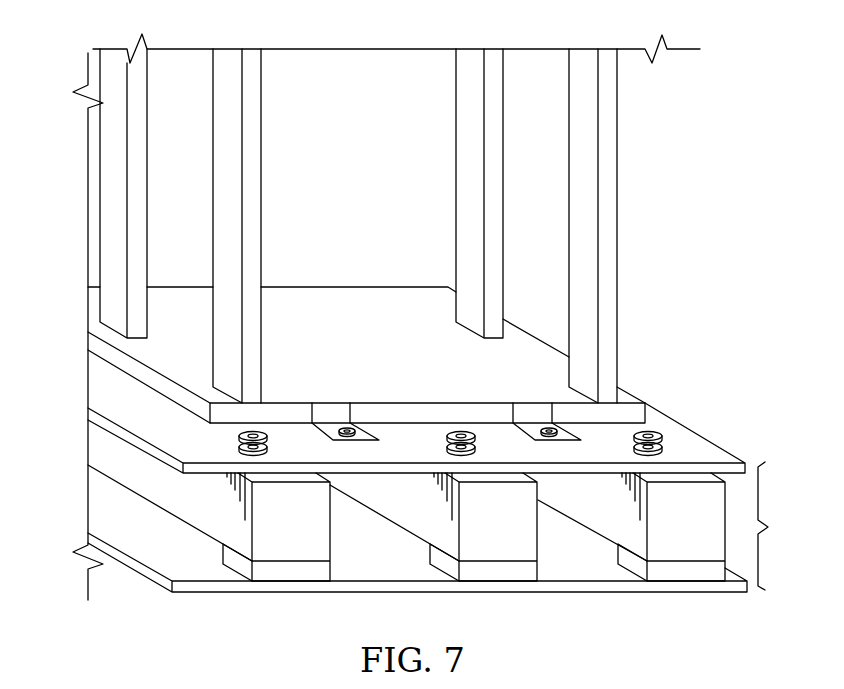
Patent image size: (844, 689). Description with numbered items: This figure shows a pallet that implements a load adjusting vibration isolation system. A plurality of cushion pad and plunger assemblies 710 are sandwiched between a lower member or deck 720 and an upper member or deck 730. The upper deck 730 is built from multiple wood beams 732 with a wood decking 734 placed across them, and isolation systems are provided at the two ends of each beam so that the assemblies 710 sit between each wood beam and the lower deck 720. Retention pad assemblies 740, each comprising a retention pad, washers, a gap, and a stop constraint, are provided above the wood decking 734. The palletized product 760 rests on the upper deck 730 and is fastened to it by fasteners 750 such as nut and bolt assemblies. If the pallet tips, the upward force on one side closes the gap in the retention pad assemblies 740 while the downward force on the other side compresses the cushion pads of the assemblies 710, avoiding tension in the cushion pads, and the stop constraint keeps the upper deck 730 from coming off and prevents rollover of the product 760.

The cushion pad and plunger assemblies 710 is at (302, 570).
The lower member or deck 720 is at (168, 583).
The upper member or deck 730 is at (417, 550).
The wood beams 732 is at (95, 455).
The wood decking 734 is at (90, 417).
The retention pad assemblies 740 is at (657, 437).
The fasteners 750 is at (345, 428).
The palletized product 760 is at (617, 226).